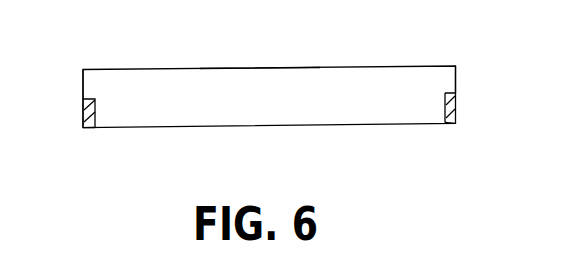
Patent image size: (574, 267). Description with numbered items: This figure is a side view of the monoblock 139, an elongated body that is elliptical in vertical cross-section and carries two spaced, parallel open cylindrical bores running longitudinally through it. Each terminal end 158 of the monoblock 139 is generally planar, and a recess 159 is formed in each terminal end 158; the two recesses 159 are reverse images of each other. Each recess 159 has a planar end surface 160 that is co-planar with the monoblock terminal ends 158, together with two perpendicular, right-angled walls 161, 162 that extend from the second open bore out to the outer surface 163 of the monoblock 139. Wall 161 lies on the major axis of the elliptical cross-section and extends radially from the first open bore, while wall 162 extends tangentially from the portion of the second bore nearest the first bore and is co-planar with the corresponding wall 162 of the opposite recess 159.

The monoblock 139 is at (368, 67).
The terminal end 158 is at (83, 88).
The recess 159 is at (456, 100).
The planar end surface 160 is at (84, 124).
The wall 161 is at (83, 110).
The wall 162 is at (90, 128).
The outer surface 163 is at (200, 69).